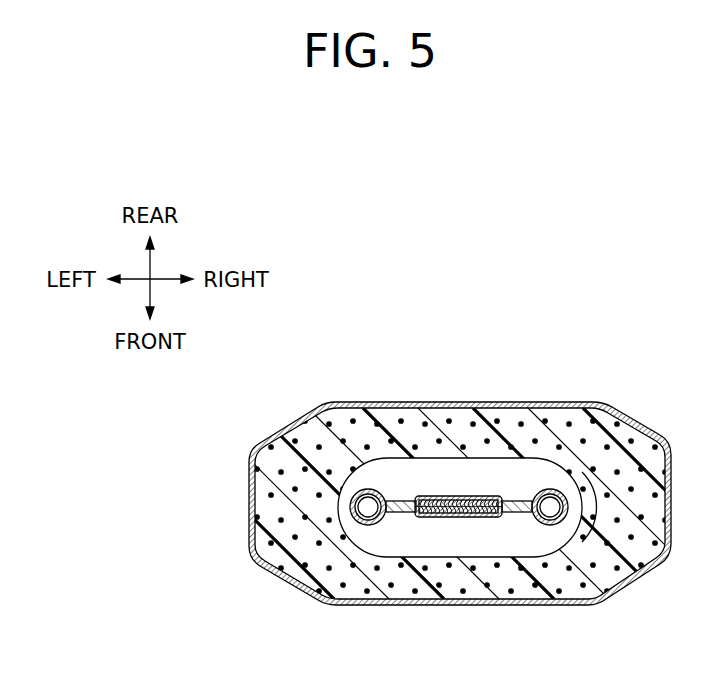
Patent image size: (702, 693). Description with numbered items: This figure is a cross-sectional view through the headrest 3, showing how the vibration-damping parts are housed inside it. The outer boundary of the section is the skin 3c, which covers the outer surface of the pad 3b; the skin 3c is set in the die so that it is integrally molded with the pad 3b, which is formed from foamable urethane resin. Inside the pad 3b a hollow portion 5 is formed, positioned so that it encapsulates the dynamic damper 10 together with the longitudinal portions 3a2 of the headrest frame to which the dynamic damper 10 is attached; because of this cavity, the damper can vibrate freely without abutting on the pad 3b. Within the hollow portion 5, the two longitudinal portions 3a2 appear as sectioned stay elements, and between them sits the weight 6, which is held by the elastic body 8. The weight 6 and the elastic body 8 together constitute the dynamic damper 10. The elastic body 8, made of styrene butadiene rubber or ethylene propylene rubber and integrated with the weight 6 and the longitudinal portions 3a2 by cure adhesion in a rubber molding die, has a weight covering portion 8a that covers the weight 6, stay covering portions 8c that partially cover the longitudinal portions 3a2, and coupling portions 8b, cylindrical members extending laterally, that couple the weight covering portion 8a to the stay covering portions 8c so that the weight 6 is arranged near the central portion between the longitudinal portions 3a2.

The headrest 3 is at (312, 407).
The pad 3b is at (272, 465).
The skin 3c is at (283, 428).
The longitudinal portions 3a2 is at (368, 489).
The hollow portion 5 is at (583, 487).
The weight 6 is at (425, 494).
The elastic body 8 is at (490, 421).
The weight covering portion 8a is at (492, 495).
The coupling portions 8b is at (522, 497).
The stay covering portions 8c is at (550, 489).
The dynamic damper 10 is at (455, 494).